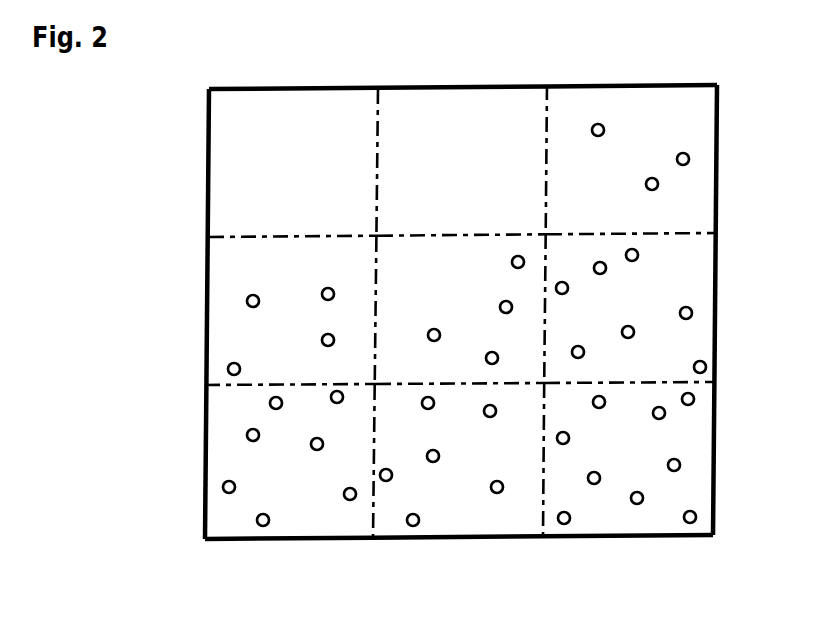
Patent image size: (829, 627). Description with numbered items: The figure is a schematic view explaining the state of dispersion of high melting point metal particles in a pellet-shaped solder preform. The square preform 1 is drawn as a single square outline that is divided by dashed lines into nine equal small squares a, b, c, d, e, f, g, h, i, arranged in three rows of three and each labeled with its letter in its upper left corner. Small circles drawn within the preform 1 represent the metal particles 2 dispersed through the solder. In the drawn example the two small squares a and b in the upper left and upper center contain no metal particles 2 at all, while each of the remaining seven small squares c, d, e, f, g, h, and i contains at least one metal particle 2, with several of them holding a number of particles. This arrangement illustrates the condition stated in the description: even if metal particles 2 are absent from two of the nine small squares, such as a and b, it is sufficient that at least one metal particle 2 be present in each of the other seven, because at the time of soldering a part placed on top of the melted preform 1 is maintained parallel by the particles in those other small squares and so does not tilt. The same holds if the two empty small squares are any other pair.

The square preform 1 is at (493, 348).
The metal particle 2 is at (659, 185).
The small square a is at (293, 162).
The small square b is at (462, 160).
The small square c is at (632, 159).
The small square d is at (290, 311).
The small square e is at (461, 309).
The small square f is at (630, 308).
The small square g is at (290, 462).
The small square h is at (458, 460).
The small square i is at (628, 459).